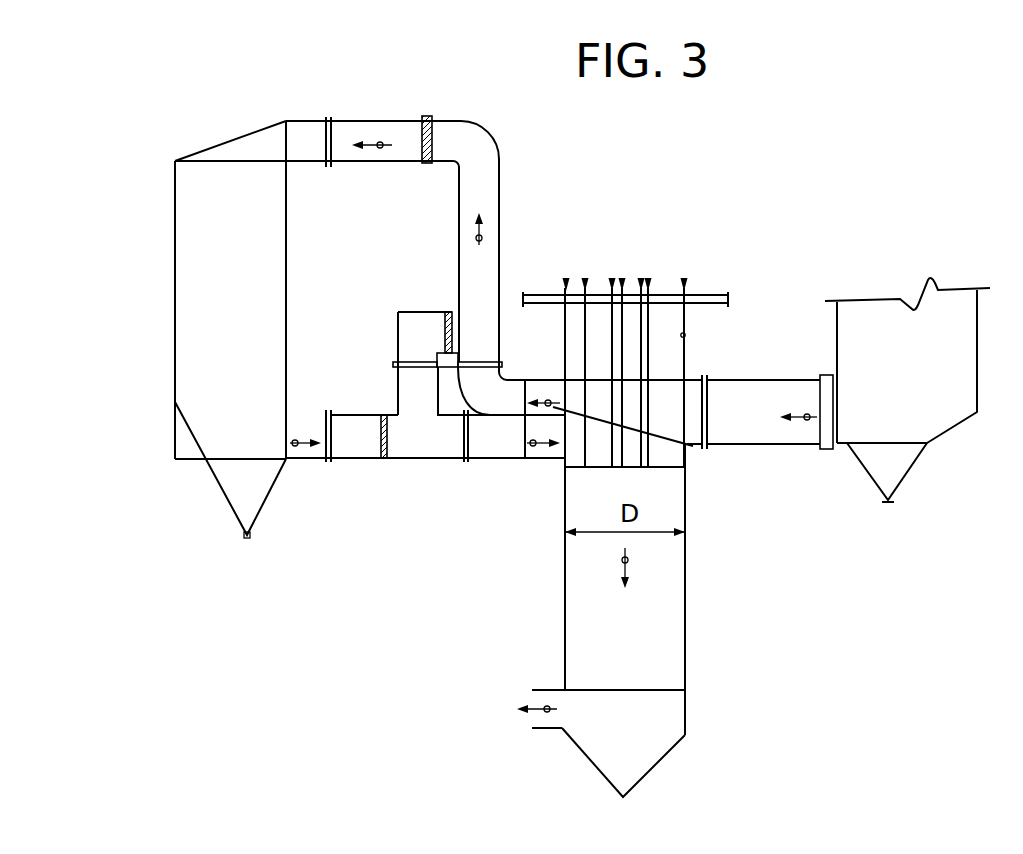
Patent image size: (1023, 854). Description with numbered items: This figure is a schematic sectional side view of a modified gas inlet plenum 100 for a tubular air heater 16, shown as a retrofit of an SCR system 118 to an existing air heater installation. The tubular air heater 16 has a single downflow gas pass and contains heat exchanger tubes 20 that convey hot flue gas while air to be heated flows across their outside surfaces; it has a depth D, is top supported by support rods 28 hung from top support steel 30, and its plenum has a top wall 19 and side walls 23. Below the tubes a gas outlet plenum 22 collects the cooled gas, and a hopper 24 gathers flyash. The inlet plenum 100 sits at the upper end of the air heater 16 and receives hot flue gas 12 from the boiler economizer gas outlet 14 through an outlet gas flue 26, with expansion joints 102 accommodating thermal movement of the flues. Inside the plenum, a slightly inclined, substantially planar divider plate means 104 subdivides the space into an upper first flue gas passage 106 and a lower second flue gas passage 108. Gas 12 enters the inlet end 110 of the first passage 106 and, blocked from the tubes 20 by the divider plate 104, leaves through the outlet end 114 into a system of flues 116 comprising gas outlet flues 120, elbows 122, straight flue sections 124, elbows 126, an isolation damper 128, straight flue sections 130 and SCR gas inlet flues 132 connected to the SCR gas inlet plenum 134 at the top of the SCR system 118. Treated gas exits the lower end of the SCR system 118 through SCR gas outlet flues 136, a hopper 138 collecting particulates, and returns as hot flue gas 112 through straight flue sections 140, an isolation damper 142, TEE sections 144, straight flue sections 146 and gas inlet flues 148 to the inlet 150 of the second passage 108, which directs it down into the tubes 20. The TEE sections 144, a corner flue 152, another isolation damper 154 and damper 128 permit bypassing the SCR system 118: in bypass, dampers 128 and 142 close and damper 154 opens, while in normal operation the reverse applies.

The hot flue gas 12 is at (380, 143).
The boiler economizer gas outlet 14 is at (916, 392).
The tubular air heater 16 is at (545, 584).
The top wall 19 is at (657, 380).
The heat exchanger tubes 20 is at (675, 628).
The gas outlet plenum 22 is at (677, 708).
The side walls 23 is at (610, 412).
The hopper 24 is at (652, 757).
The outlet gas flue 26 is at (752, 380).
The support rods 28 is at (685, 335).
The top support steel 30 is at (707, 294).
The modified gas inlet plenum 100 is at (778, 558).
The expansion joints 102 is at (331, 158).
The divider plate means 104 is at (657, 437).
The first flue gas passage 106 is at (598, 380).
The second flue gas passage 108 is at (625, 511).
The inlet end 110 is at (683, 395).
The hot flue gas 112 is at (295, 440).
The outlet end 114 is at (565, 386).
The system of flues 116 is at (540, 191).
The SCR system 118 is at (254, 319).
The gas outlet flues 120 is at (550, 386).
The elbows 122 is at (519, 407).
The straight flue sections 124 is at (500, 250).
The elbows 126 is at (492, 146).
The isolation damper 128 is at (434, 145).
The straight flue sections 130 is at (390, 157).
The SCR gas inlet flues 132 is at (295, 159).
The SCR gas inlet plenum 134 is at (218, 147).
The SCR gas outlet flues 136 is at (305, 460).
The hopper 138 is at (230, 495).
The straight flue sections 140 is at (352, 460).
The isolation damper 142 is at (388, 460).
The TEE sections 144 is at (432, 452).
The straight flue sections 146 is at (507, 460).
The gas inlet flues 148 is at (531, 459).
The inlet 150 is at (557, 459).
The corner flue 152 is at (398, 322).
The isolation damper 154 is at (450, 311).